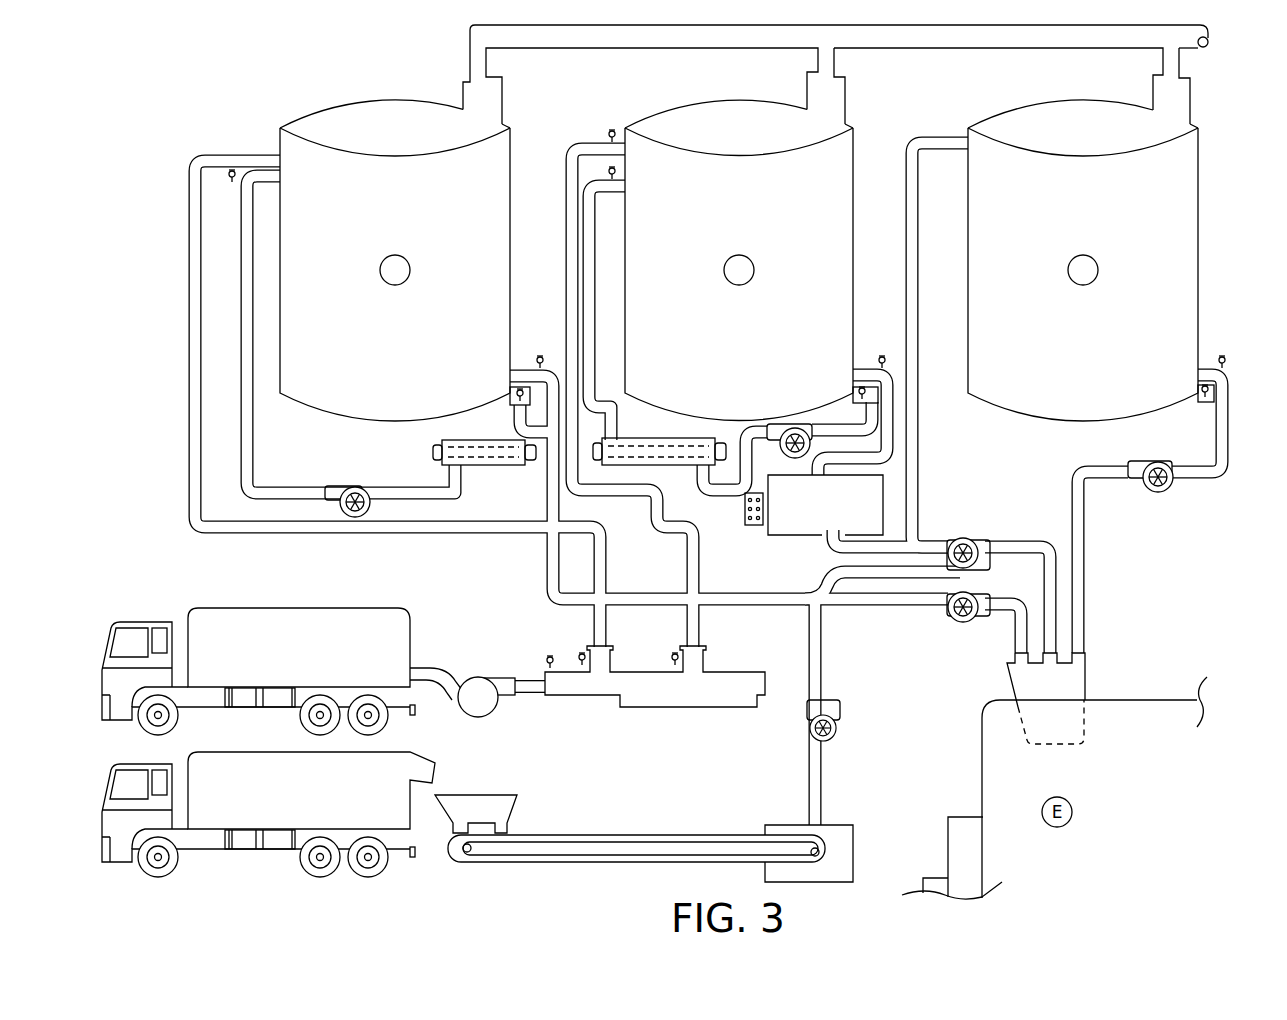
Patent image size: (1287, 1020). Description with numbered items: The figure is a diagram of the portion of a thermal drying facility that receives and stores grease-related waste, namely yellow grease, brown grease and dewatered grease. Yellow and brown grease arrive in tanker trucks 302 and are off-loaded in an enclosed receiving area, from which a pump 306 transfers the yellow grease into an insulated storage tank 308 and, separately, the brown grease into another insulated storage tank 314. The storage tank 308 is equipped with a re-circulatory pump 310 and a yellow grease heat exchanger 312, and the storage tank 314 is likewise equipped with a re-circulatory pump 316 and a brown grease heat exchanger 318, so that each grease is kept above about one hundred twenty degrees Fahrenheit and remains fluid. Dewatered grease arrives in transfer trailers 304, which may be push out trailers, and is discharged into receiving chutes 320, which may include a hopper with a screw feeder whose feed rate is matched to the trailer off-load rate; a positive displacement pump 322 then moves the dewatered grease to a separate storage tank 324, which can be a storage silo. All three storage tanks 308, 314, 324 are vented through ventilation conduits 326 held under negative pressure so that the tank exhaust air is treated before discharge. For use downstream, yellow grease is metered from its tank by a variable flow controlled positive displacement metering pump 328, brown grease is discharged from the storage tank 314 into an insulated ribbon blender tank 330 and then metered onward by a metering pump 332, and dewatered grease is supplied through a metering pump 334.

The tanker trucks 302 is at (262, 607).
The transfer trailers 304 is at (255, 848).
The pump 306 is at (480, 677).
The storage tank 308 is at (327, 110).
The re-circulatory pump 310 is at (337, 487).
The yellow grease heat exchanger 312 is at (432, 453).
The storage tank 314 is at (672, 110).
The re-circulatory pump 316 is at (817, 432).
The brown grease heat exchanger 318 is at (688, 470).
The receiving chutes 320 is at (517, 808).
The positive displacement pump 322 is at (836, 735).
The storage tank 324 is at (1010, 110).
The ventilation conduits 326 is at (424, 87).
The variable flow controlled positive displacement metering pump 328 is at (960, 622).
The ribbon blender tank 330 is at (772, 540).
The variable flow controlled positive displacement metering pump 332 is at (965, 540).
The variable flow controlled positive displacement metering pump 334 is at (1170, 492).